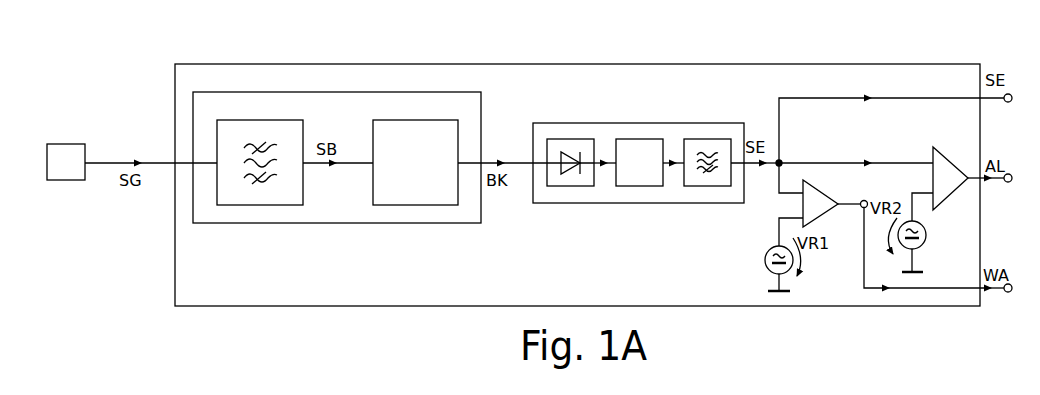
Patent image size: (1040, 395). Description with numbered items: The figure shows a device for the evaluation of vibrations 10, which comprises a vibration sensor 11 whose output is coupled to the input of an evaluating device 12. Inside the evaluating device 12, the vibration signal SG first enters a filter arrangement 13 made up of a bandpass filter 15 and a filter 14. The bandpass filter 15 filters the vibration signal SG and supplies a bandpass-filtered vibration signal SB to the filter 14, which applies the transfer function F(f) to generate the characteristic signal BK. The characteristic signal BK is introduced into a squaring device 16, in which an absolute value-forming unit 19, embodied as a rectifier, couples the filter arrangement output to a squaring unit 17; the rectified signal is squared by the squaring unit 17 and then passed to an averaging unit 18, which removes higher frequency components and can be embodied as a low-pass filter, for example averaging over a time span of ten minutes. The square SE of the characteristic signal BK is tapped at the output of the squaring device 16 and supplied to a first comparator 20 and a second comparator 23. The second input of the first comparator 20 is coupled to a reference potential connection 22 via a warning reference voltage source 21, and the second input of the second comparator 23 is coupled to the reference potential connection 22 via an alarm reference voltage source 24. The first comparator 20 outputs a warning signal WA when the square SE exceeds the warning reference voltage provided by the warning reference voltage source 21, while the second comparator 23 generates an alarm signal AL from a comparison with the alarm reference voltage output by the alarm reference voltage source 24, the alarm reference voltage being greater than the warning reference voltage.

The device for the evaluation of vibrations 10 is at (115, 257).
The vibration sensor 11 is at (68, 181).
The evaluating device 12 is at (175, 270).
The filter arrangement 13 is at (340, 223).
The filter 14 is at (373, 193).
The bandpass filter 15 is at (265, 205).
The squaring device 16 is at (637, 203).
The squaring unit 17 is at (638, 139).
The averaging unit 18 is at (705, 139).
The absolute value-forming unit 19 is at (563, 139).
The first comparator 20 is at (836, 187).
The warning reference voltage source 21 is at (765, 260).
The reference potential connection 22 is at (790, 291).
The second comparator 23 is at (945, 158).
The alarm reference voltage source 24 is at (926, 235).